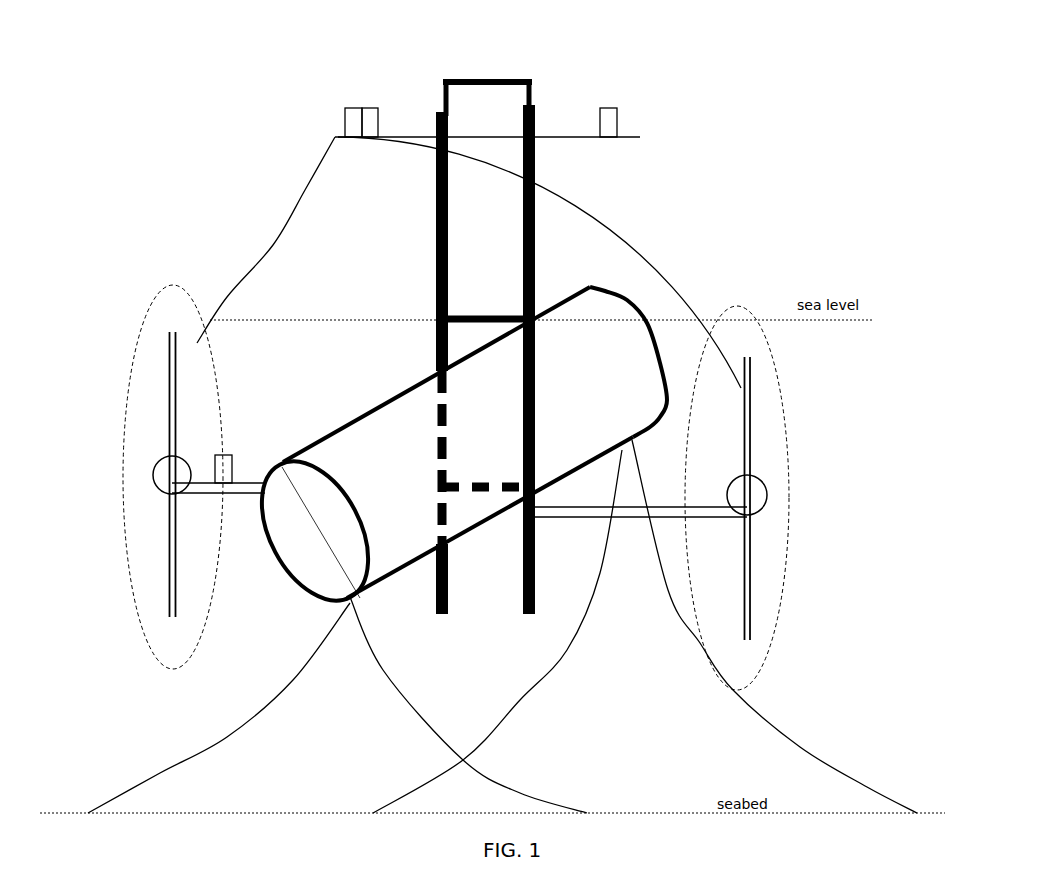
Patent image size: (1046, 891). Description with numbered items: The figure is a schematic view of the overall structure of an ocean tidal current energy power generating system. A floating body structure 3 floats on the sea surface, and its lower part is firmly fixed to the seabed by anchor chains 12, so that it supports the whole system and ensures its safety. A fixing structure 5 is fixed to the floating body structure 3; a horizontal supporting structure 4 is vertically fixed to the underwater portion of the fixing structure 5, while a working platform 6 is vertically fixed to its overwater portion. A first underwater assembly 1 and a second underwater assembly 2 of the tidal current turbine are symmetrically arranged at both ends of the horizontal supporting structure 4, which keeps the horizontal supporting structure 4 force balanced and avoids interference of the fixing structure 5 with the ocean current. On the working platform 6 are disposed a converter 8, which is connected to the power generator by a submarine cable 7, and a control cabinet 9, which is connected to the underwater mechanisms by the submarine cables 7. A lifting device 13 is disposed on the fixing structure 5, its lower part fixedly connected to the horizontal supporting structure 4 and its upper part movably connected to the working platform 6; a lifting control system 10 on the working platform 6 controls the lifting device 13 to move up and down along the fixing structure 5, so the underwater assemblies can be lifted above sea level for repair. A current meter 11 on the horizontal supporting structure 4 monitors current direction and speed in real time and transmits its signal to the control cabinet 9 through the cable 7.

The first underwater assembly 1 is at (133, 607).
The second underwater assembly 2 is at (770, 637).
The floating body structure 3 is at (400, 570).
The horizontal supporting structure 4 is at (657, 507).
The fixing structure 5 is at (467, 293).
The working platform 6 is at (560, 137).
The submarine cable 7 is at (273, 245).
The converter 8 is at (345, 108).
The control cabinet 9 is at (373, 133).
The lifting control system 10 is at (617, 108).
The current meter 11 is at (230, 453).
The anchor chain 12 is at (567, 650).
The lifting device 13 is at (537, 277).